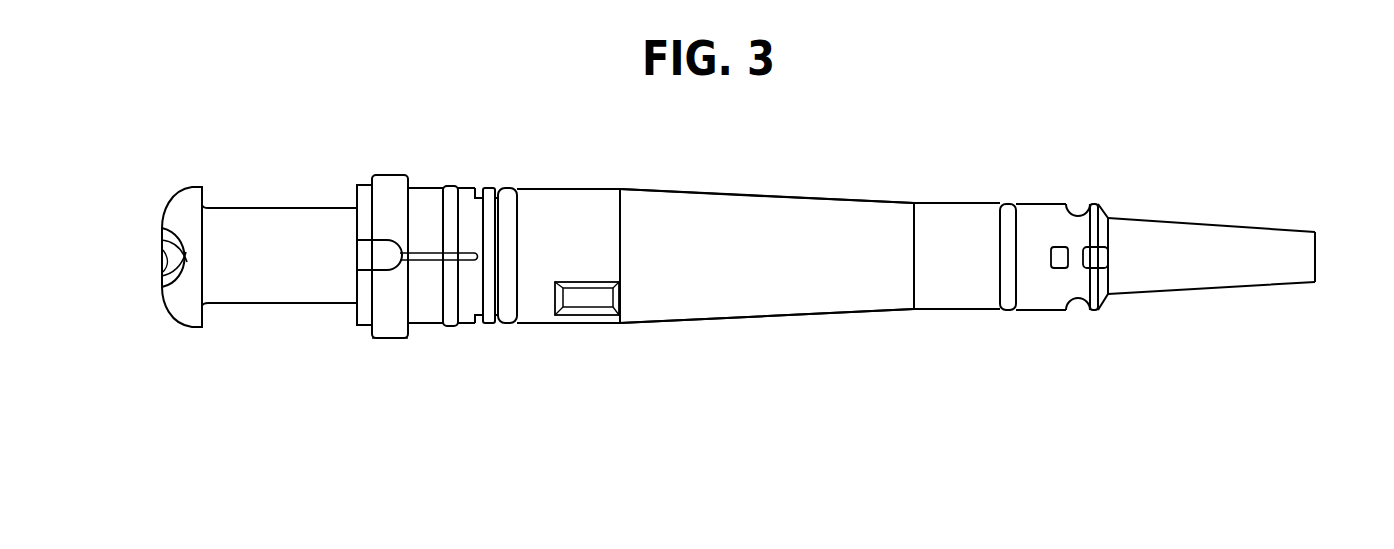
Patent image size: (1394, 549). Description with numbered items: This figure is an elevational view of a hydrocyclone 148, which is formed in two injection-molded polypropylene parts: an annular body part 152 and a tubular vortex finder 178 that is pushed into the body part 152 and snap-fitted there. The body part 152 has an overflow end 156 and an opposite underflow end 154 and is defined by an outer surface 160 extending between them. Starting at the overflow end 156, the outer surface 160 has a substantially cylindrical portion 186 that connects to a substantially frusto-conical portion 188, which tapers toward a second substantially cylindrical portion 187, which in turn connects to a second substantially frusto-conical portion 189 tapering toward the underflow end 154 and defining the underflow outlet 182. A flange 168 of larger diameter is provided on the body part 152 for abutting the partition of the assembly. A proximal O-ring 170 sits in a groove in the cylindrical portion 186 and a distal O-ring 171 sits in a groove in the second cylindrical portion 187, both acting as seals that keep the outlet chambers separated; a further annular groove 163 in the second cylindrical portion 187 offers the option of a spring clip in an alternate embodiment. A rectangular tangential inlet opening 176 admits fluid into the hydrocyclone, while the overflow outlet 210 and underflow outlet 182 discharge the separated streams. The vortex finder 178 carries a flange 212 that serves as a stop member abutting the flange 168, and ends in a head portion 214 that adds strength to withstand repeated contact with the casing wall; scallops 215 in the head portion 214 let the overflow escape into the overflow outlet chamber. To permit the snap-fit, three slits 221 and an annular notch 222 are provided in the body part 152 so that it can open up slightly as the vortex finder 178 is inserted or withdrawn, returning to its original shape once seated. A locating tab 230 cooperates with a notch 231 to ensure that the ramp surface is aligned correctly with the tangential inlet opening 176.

The hydrocyclone 148 is at (742, 238).
The body part 152 is at (748, 202).
The underflow end 154 is at (1315, 232).
The overflow end 156 is at (370, 185).
The outer surface 160 is at (688, 192).
The annular groove 163 is at (1079, 216).
The flange 168 is at (405, 333).
The proximal O-ring 170 is at (505, 190).
The distal O-ring 171 is at (1007, 205).
The tangential inlet opening 176 is at (603, 297).
The vortex finder 178 is at (288, 208).
The underflow outlet 182 is at (1318, 258).
The substantially cylindrical portion 186 is at (545, 325).
The second substantially cylindrical portion 187 is at (952, 312).
The substantially frusto-conical portion 188 is at (748, 310).
The second substantially frusto-conical portion 189 is at (1137, 218).
The overflow outlet 210 is at (162, 237).
The flange 212 is at (365, 323).
The head portion 214 is at (186, 202).
The scallops 215 is at (160, 277).
The slits 221 is at (428, 250).
The annular notch 222 is at (478, 320).
The locating tab 230 is at (383, 248).
The notch 231 is at (390, 280).